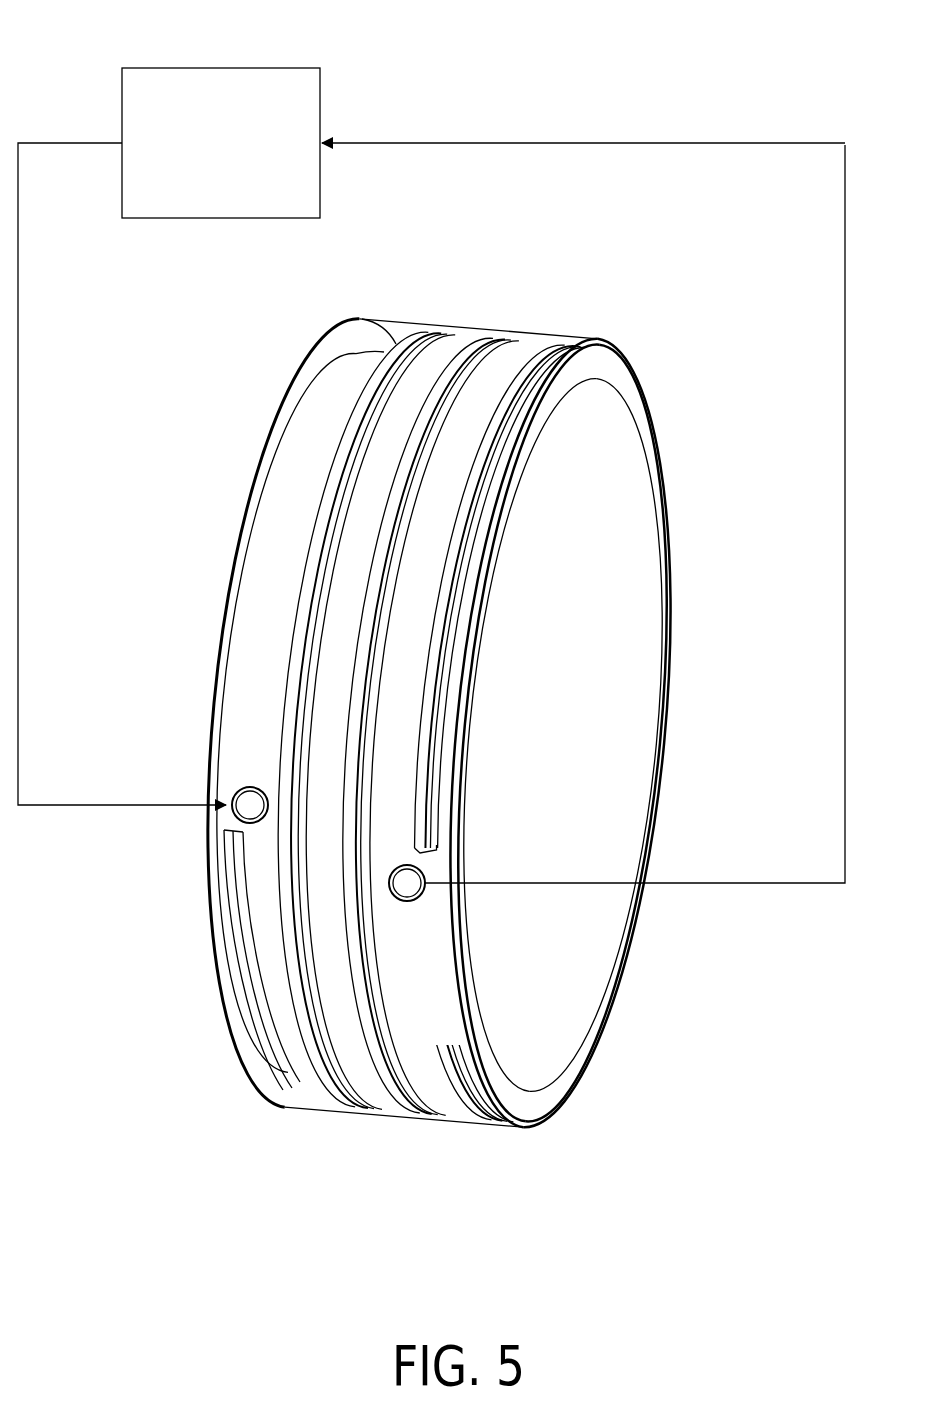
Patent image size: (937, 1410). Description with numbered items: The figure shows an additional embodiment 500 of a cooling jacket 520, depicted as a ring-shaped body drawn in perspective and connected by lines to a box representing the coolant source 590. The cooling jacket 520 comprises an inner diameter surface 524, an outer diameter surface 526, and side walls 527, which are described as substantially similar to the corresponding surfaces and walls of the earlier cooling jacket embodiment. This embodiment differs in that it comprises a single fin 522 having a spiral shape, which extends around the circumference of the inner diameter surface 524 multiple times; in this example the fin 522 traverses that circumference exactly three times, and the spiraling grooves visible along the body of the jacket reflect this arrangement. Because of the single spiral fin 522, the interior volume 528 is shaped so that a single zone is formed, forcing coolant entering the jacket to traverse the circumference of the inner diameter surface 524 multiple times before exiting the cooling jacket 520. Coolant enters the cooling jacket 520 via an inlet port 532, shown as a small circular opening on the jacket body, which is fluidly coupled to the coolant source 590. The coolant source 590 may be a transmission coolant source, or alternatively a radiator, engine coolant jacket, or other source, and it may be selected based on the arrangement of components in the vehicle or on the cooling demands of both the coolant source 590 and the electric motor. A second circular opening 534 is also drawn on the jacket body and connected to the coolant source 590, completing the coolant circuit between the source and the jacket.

The additional embodiment 500 is at (830, 43).
The cooling jacket 520 is at (655, 259).
The single fin 522 is at (238, 912).
The inner diameter surface 524 is at (595, 1040).
The outer diameter surface 526 is at (430, 322).
The side walls 527 is at (548, 1098).
The interior volume 528 is at (235, 628).
The inlet port 532 is at (228, 800).
The second electrode contact 534 is at (420, 896).
The coolant source 590 is at (242, 157).